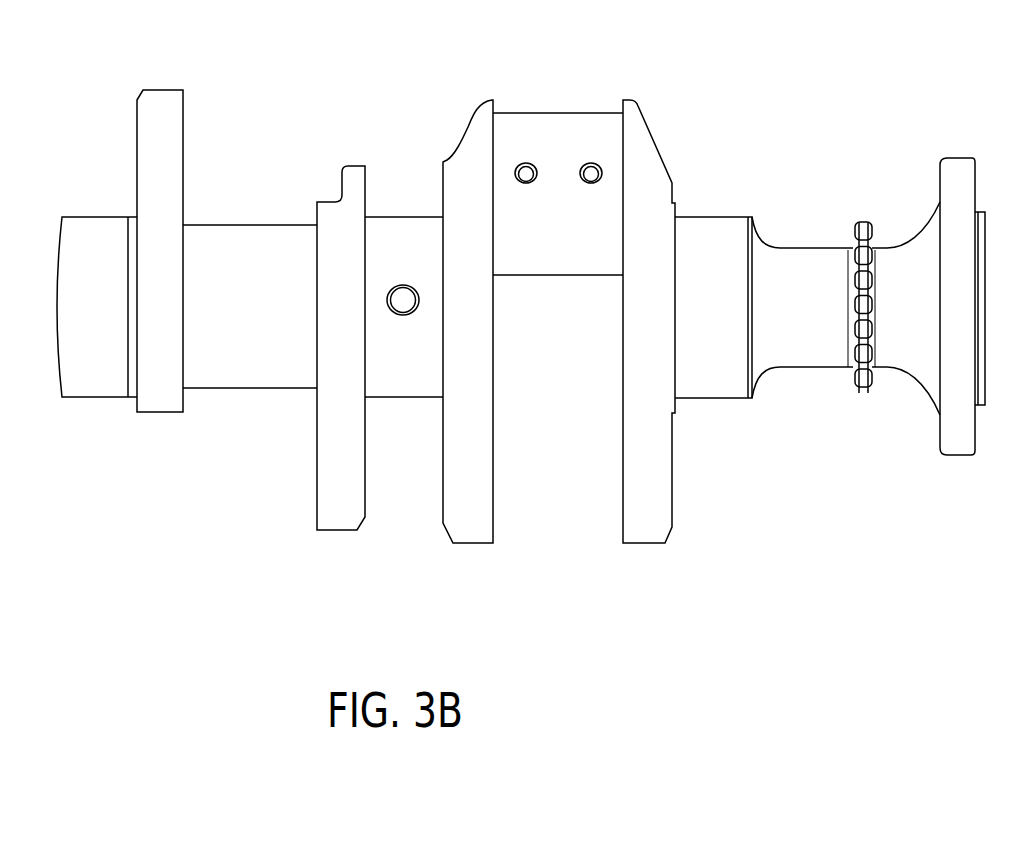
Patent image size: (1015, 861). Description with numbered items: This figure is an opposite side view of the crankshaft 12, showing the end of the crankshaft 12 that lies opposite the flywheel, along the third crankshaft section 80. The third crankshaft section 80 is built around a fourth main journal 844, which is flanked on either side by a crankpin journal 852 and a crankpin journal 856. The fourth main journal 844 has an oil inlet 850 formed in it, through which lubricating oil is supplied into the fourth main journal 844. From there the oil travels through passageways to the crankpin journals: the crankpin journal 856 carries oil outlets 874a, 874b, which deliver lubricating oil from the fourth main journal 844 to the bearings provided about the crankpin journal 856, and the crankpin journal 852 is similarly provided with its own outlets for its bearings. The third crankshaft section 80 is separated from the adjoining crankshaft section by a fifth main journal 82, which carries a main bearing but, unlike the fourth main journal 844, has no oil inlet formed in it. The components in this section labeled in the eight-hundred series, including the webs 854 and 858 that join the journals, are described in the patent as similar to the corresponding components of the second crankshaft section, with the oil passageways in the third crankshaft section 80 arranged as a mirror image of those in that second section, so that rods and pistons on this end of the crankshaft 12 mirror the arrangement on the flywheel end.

The third crankshaft section 80 is at (627, 60).
The fifth main journal 82 is at (108, 398).
The crankshaft 12 is at (806, 241).
The fourth main journal 844 is at (412, 398).
The oil inlet 850 is at (410, 315).
The crankpin journal 852 is at (253, 389).
The web 854 is at (337, 200).
The crankpin journal 856 is at (567, 276).
The web / counterweight 858 is at (457, 148).
The oil outlet 874a is at (526, 163).
The oil outlet 874b is at (590, 163).